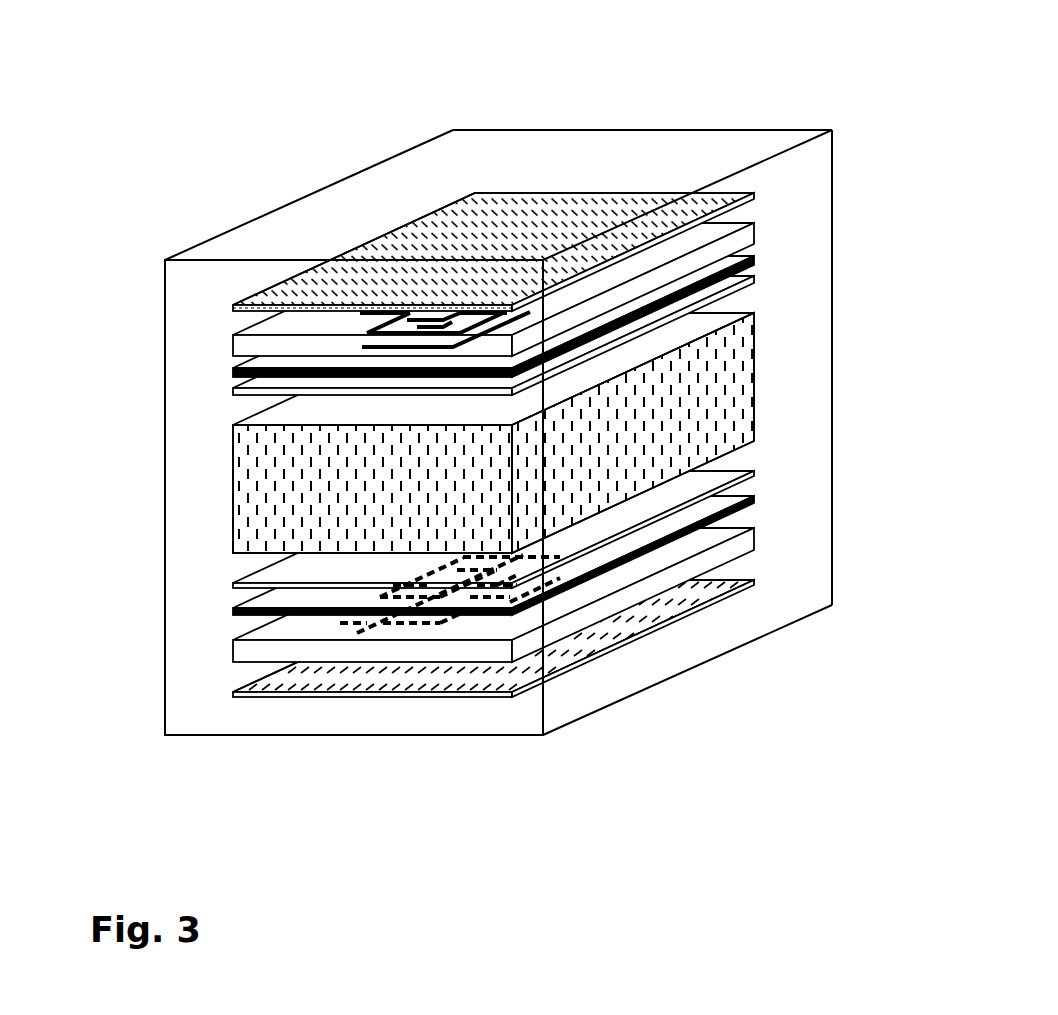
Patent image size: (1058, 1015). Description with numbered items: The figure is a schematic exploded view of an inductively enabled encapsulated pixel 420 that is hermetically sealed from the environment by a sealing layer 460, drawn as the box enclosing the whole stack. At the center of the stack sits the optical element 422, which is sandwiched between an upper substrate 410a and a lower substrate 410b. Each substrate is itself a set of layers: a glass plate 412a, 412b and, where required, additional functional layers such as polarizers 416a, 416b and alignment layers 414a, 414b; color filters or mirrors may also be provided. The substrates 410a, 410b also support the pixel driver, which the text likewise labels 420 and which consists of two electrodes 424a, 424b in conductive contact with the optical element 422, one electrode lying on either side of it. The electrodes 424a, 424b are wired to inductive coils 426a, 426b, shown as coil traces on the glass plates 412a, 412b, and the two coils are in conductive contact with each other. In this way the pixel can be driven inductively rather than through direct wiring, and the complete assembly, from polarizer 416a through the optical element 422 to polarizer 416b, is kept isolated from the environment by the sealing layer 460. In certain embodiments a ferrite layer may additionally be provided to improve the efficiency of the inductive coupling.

The inductively enabled encapsulated pixel 420 is at (753, 78).
The upper substrate 410a is at (205, 640).
The lower substrate 410b is at (183, 347).
The glass plate 412a is at (745, 546).
The glass plate 412b is at (243, 342).
The alignment layer 414a is at (258, 577).
The alignment layer 414b is at (252, 393).
The polarizer 416a is at (313, 685).
The polarizer 416b is at (500, 200).
The optical element 422 is at (526, 433).
The electrode 424a is at (756, 498).
The electrode 424b is at (757, 258).
The inductive coil 426a is at (398, 618).
The inductive coil 426b is at (632, 272).
The sealing layer 460 is at (617, 700).